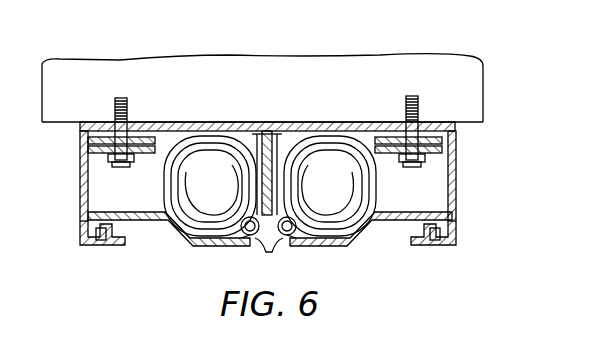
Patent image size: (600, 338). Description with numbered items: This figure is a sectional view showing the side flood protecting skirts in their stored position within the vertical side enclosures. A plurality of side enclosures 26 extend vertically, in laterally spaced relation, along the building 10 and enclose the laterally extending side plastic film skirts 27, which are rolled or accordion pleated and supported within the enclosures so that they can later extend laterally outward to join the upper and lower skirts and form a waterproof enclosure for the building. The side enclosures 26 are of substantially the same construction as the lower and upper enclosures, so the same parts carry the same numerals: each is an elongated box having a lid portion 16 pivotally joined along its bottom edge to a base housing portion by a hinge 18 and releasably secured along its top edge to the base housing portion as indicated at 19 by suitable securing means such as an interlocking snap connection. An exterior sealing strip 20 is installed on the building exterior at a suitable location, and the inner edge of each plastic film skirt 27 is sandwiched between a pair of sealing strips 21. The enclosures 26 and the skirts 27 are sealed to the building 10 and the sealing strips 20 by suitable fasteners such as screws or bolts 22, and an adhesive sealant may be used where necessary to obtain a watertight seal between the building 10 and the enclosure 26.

The building 10 is at (106, 66).
The exterior sealing strip 20 is at (262, 130).
The interior sealing strips 21 is at (58, 143).
The bolts 22 is at (122, 167).
The side enclosures 26 is at (80, 176).
The side plastic film skirts 27 is at (180, 184).
The lid portion 16 is at (162, 232).
The hinge 18 is at (270, 254).
The securing means 19 is at (96, 246).